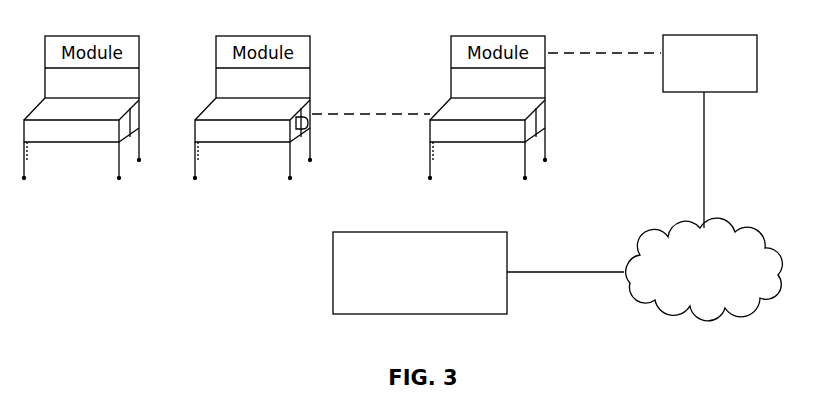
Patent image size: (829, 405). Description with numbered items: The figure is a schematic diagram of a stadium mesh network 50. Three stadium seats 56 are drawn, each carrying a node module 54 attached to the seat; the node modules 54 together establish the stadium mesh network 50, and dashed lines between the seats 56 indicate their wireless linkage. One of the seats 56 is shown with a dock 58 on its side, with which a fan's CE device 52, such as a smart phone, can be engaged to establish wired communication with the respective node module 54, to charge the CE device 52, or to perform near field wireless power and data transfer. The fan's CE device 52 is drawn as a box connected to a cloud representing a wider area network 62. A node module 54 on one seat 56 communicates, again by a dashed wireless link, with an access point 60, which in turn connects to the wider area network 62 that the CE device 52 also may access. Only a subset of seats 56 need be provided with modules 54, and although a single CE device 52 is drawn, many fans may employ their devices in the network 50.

The mesh network 50 is at (180, 223).
The fan's CE device 52 is at (483, 232).
The node module 54 is at (303, 47).
The stadium seat 56 is at (216, 88).
The dock 58 is at (299, 131).
The access point 60 is at (736, 35).
The wide area network 62 is at (760, 241).